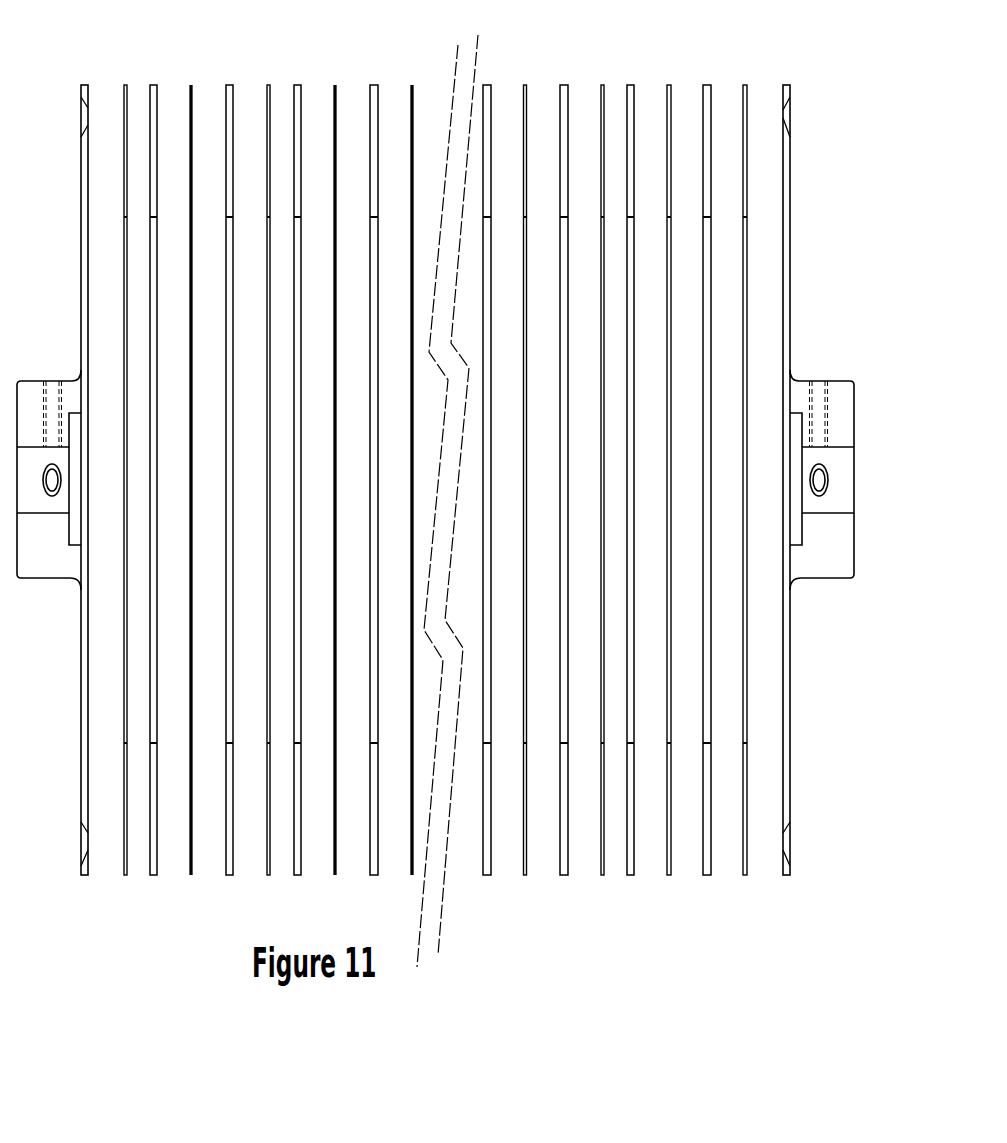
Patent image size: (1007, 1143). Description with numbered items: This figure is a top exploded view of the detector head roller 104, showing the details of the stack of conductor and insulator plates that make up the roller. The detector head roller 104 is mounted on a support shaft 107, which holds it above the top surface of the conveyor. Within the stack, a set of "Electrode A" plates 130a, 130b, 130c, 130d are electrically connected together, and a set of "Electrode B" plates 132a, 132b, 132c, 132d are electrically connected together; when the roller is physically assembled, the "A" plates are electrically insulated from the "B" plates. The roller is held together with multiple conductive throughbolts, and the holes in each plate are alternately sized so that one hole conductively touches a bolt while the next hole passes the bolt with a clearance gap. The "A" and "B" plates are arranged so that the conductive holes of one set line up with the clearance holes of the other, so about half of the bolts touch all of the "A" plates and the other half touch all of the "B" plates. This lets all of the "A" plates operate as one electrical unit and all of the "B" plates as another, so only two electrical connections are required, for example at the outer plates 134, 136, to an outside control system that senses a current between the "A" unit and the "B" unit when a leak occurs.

The detector head roller 104 is at (771, 905).
The support shaft 107 is at (855, 465).
The Electrode A plate 130a is at (153, 85).
The Electrode A plate 130b is at (297, 85).
The Electrode A plate 130c is at (486, 85).
The Electrode A plate 130d is at (630, 85).
The Electrode B plate 132a is at (229, 85).
The Electrode B plate 132b is at (373, 85).
The Electrode B plate 132c is at (563, 85).
The Electrode B plate 132d is at (706, 85).
The outer plate 134 is at (81, 180).
The outer plate 136 is at (786, 118).